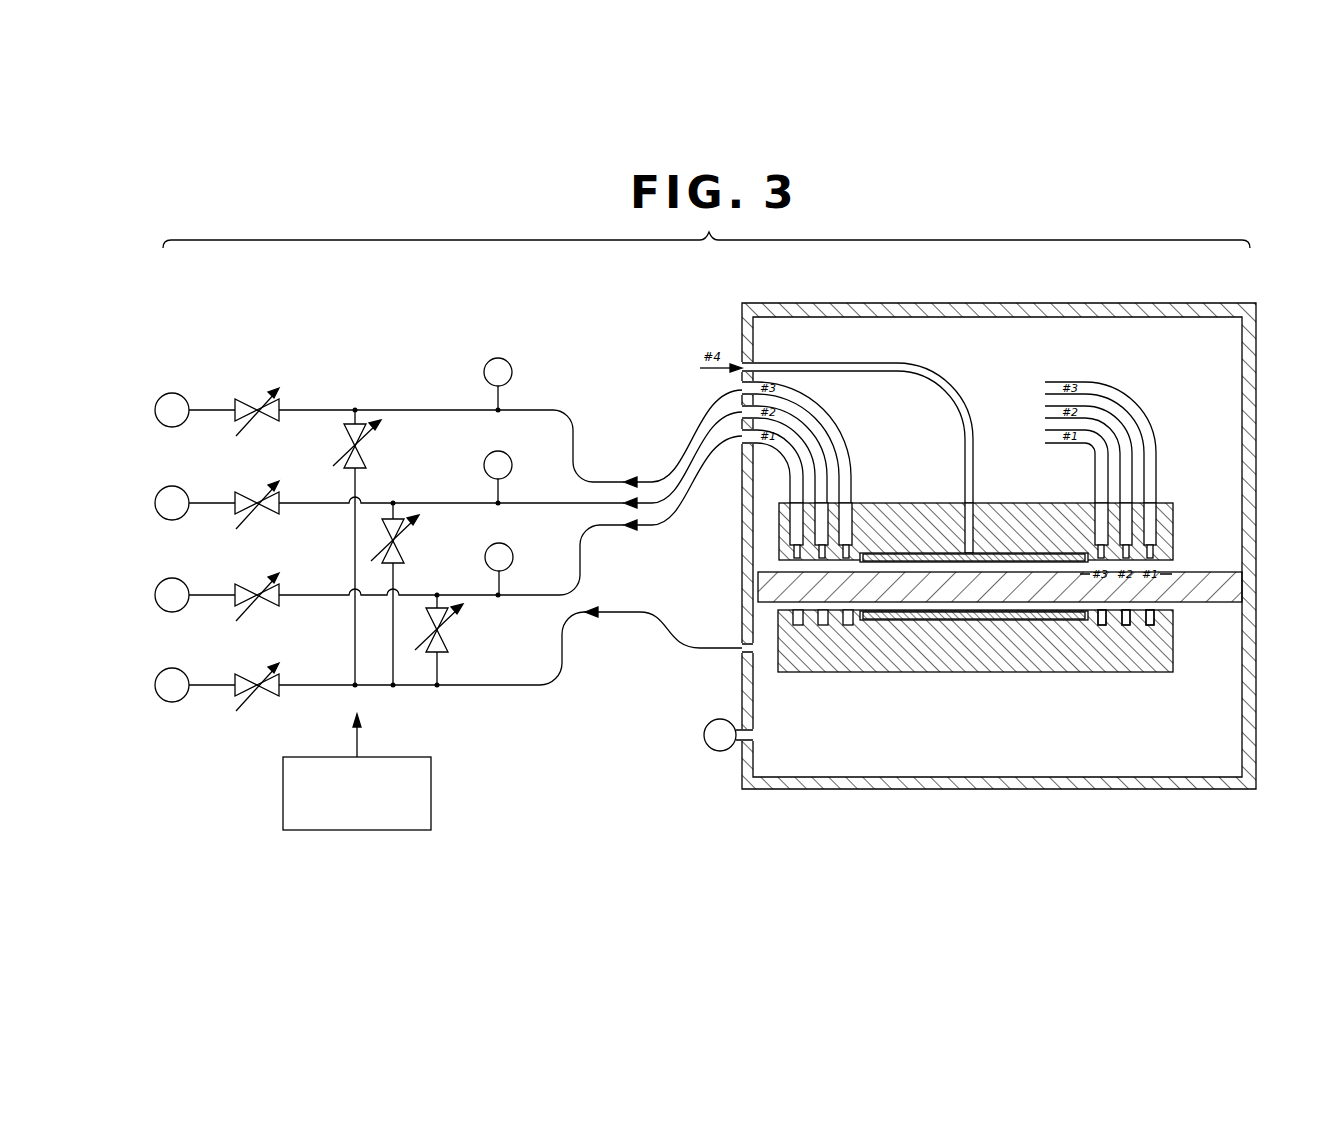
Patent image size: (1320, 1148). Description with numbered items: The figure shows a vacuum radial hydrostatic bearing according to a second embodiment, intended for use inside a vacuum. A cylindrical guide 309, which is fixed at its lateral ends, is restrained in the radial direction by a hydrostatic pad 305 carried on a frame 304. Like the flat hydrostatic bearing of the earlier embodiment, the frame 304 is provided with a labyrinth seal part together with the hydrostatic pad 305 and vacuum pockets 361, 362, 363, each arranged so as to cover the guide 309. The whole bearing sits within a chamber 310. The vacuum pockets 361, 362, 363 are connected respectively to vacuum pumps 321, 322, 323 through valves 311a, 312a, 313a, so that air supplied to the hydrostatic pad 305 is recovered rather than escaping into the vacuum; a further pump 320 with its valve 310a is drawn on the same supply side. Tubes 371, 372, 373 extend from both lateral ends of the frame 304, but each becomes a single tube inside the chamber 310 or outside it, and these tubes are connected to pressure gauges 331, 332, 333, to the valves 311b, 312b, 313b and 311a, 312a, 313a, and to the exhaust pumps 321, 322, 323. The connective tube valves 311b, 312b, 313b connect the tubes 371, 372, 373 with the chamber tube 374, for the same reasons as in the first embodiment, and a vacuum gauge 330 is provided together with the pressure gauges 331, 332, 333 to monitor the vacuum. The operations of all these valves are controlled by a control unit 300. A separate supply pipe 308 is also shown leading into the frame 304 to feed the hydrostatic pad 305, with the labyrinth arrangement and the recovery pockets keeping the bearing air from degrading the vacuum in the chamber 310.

The control unit 300 is at (431, 792).
The frame 304 is at (940, 510).
The hydrostatic pad 305 is at (1000, 548).
The gas supply pipe #4 308 is at (958, 390).
The cylindrical guide 309 is at (1208, 572).
The chamber 310 is at (1195, 303).
The flow control valve 310a is at (272, 675).
The valve 311a is at (272, 585).
The valve 312a is at (272, 493).
The valve 313a is at (272, 400).
The connective tube valve 311b is at (449, 637).
The connective tube valve 312b is at (405, 547).
The connective tube valve 313b is at (367, 452).
The pump 320 is at (172, 668).
The vacuum pump 321 is at (172, 578).
The vacuum pump 322 is at (172, 486).
The vacuum pump 323 is at (172, 393).
The vacuum gauge 330 is at (704, 735).
The pressure gauge 331 is at (511, 563).
The pressure gauge 332 is at (511, 471).
The pressure gauge 333 is at (511, 378).
The vacuum pocket 361 is at (1165, 640).
The vacuum pocket 362 is at (1125, 627).
The vacuum pocket 363 is at (1100, 627).
The tube 371 is at (790, 478).
The tube 372 is at (812, 438).
The tube 373 is at (826, 404).
The chamber tube 374 is at (742, 650).